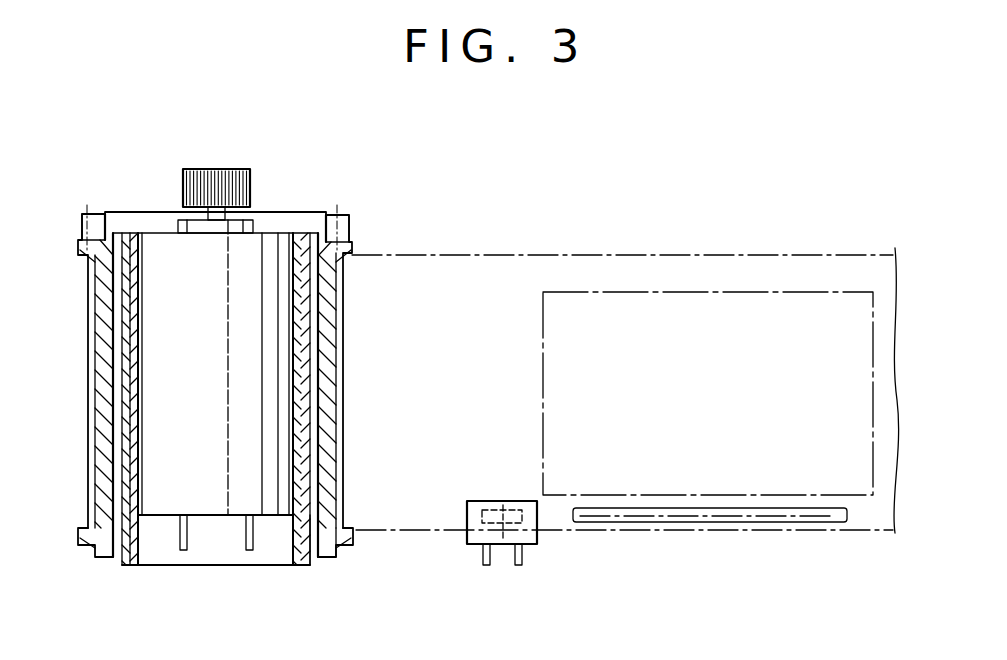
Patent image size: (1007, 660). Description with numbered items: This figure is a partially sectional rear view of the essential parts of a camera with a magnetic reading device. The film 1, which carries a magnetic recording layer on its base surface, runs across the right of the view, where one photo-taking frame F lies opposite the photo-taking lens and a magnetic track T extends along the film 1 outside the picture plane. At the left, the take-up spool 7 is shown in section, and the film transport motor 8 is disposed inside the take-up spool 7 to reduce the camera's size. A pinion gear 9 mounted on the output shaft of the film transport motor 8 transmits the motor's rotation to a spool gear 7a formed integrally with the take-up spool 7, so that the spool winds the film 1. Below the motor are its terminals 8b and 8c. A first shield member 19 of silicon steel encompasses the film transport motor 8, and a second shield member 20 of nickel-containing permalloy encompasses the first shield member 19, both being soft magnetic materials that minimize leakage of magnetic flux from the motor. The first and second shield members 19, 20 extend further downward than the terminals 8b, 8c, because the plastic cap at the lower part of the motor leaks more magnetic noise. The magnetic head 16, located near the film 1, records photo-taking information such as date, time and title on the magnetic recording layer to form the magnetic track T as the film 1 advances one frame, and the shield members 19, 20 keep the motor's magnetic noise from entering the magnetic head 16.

The film 1 is at (513, 254).
The take-up spool 7 is at (327, 328).
The spool gear 7a is at (333, 222).
The film transport motor 8 is at (270, 245).
The terminal of the film transport motor 8b is at (178, 538).
The terminal of the film transport motor 8c is at (245, 538).
The pinion gear 9 is at (225, 170).
The magnetic head 16 is at (472, 538).
The first shield member 19 is at (295, 542).
The second shield member 20 is at (303, 563).
The photo-taking frame F is at (670, 305).
The magnetic track T is at (643, 517).